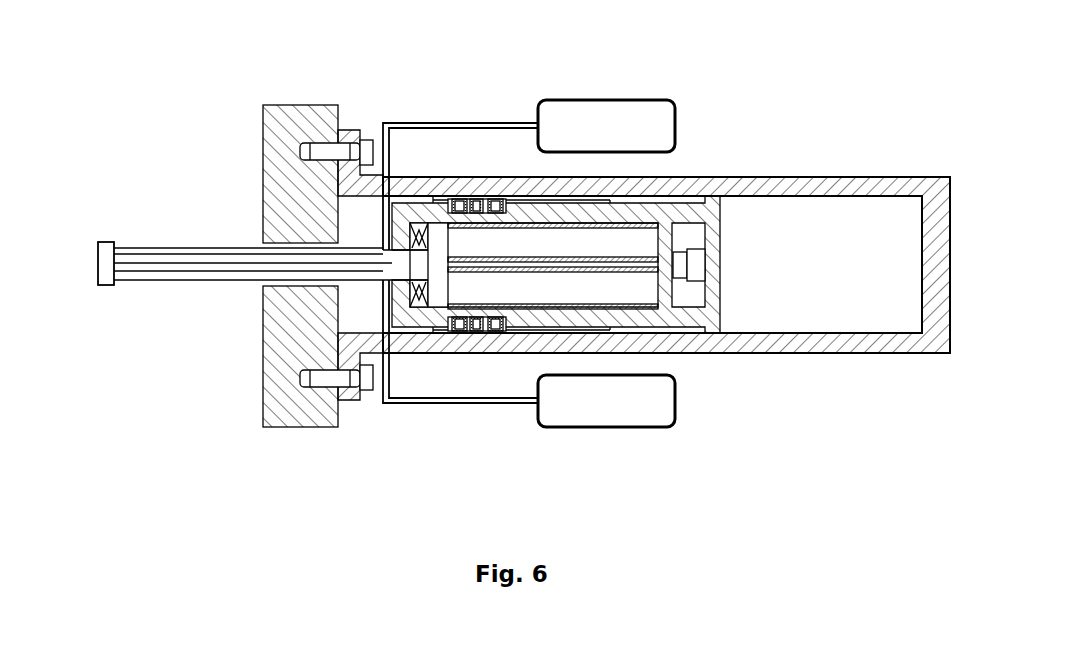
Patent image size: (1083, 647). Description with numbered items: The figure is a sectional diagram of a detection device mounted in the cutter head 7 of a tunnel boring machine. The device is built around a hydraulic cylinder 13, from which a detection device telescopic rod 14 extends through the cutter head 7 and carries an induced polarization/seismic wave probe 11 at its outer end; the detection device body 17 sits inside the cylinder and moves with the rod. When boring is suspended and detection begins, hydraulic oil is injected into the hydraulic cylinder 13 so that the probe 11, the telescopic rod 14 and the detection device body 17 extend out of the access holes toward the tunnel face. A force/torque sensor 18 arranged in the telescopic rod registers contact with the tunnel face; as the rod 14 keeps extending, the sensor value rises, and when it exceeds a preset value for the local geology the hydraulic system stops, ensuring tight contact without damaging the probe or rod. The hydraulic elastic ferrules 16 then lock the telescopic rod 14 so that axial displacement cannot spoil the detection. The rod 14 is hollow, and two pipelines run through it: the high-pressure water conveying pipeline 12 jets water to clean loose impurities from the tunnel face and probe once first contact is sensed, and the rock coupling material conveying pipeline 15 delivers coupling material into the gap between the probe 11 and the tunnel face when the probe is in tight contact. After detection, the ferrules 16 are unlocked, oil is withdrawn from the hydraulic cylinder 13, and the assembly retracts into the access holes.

The cutter head 7 is at (293, 337).
The induced polarization/seismic wave probe 11 is at (107, 238).
The high-pressure water conveying pipeline 12 is at (467, 123).
The hydraulic cylinder 13 is at (798, 220).
The detection device telescopic rod 14 is at (188, 285).
The rock coupling material conveying pipeline 15 is at (468, 407).
The hydraulic elastic ferrules 16 is at (477, 327).
The detection device body 17 is at (623, 277).
The force/torque sensor 18 is at (695, 287).